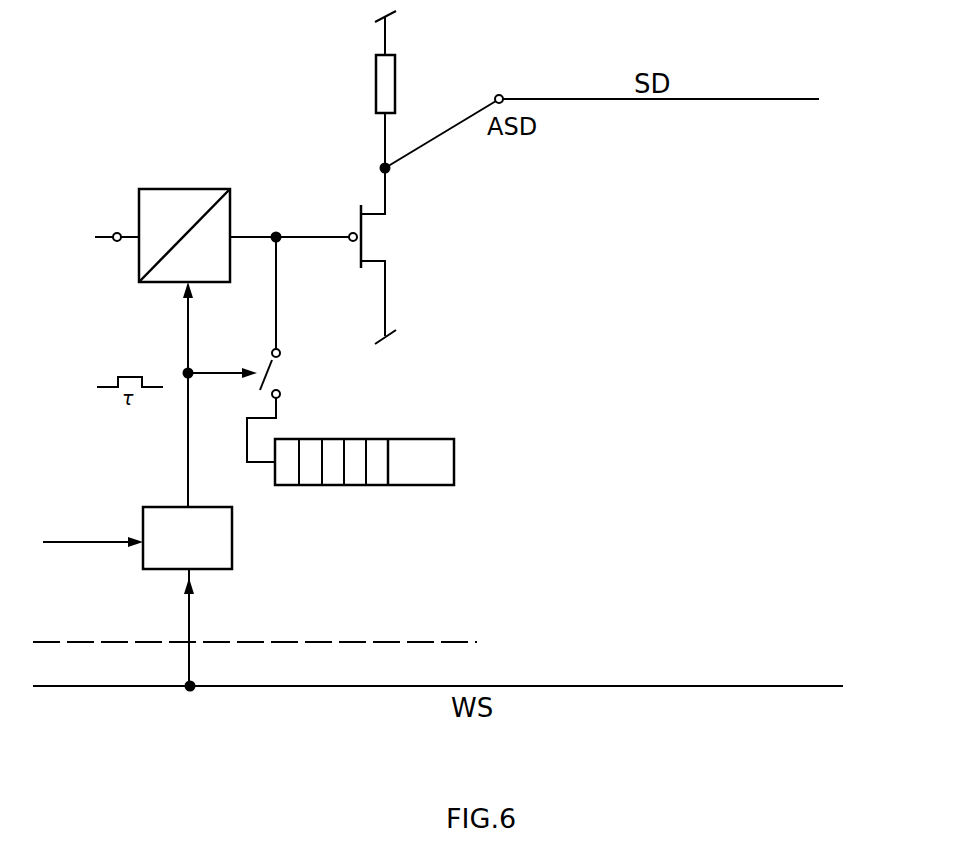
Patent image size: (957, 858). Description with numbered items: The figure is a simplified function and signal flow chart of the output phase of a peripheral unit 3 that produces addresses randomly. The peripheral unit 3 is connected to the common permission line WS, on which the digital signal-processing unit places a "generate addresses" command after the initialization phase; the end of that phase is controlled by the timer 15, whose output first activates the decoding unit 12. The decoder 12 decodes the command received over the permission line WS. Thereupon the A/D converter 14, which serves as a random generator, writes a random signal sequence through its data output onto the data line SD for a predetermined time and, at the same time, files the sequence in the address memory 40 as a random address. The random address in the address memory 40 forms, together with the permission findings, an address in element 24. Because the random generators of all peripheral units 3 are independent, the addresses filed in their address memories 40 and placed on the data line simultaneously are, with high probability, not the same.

The A/D converter 14 is at (192, 188).
The element 24 is at (455, 459).
The address memory 40 is at (332, 487).
The decoder 12 is at (140, 548).
The timer 15 is at (93, 532).
The peripheral unit 3 is at (255, 627).